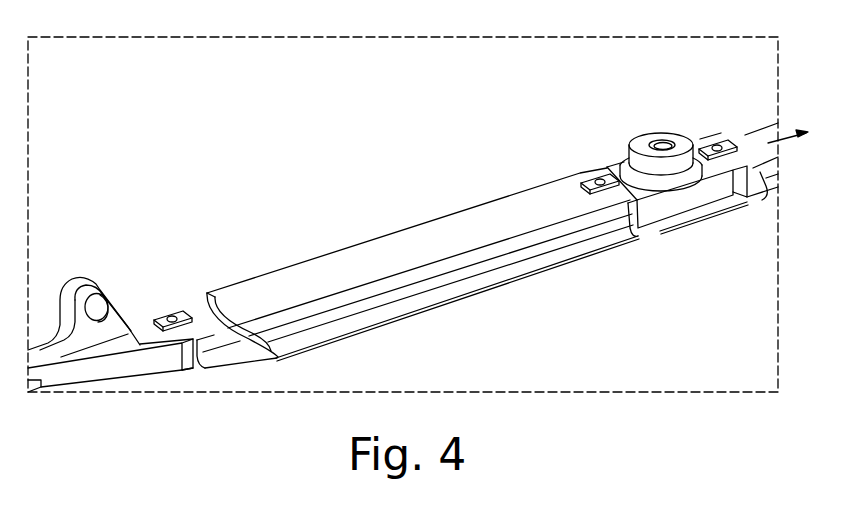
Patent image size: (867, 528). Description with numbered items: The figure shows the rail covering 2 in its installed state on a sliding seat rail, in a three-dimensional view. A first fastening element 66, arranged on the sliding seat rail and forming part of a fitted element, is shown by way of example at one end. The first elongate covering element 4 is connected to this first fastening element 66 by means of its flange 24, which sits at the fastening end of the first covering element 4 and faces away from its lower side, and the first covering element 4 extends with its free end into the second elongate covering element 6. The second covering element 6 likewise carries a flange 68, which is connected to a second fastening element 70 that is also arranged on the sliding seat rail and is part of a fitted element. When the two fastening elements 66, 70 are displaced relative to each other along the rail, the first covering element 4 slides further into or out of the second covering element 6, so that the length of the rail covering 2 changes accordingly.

The rail covering 2 is at (462, 192).
The first elongate covering element 4 is at (238, 350).
The second elongate covering element 6 is at (348, 257).
The flange 24 is at (170, 313).
The first fastening element 66 is at (140, 327).
The flange 68 is at (590, 165).
The second fastening element 70 is at (683, 207).